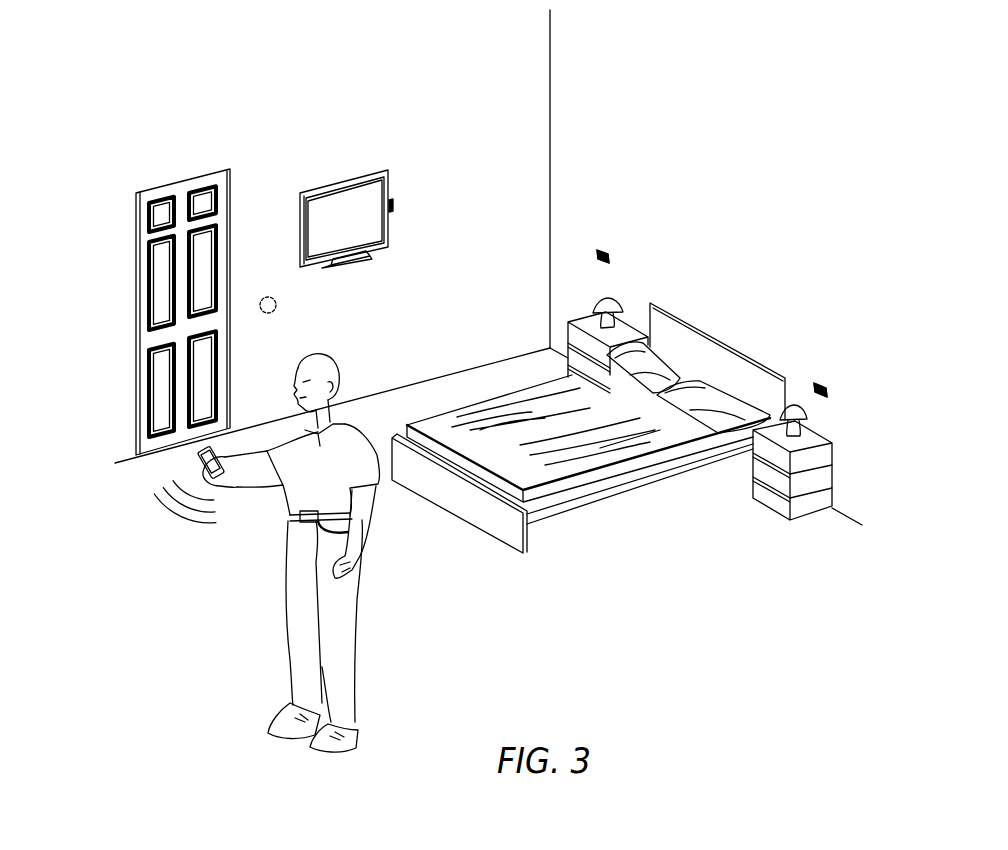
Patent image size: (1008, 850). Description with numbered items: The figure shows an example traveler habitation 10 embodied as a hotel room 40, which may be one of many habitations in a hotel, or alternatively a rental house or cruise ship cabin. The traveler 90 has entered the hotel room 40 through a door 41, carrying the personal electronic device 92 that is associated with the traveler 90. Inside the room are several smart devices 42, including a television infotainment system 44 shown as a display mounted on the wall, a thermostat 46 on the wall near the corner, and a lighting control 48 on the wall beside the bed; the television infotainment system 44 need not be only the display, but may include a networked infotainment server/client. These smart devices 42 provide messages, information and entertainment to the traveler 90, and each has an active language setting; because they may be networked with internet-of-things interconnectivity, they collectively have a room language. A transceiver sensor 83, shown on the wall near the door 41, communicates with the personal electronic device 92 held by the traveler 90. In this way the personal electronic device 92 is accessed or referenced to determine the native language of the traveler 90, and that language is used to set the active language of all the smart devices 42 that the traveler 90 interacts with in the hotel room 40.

The traveler habitation 10 is at (264, 80).
The hotel room 40 is at (552, 70).
The door 41 is at (133, 342).
The smart devices 42 is at (393, 205).
The television infotainment system 44 is at (352, 178).
The thermostat 46 is at (599, 248).
The lighting control 48 is at (823, 388).
The transceiver sensor 83 is at (279, 305).
The traveler 90 is at (361, 617).
The personal electronic device 92 is at (196, 465).